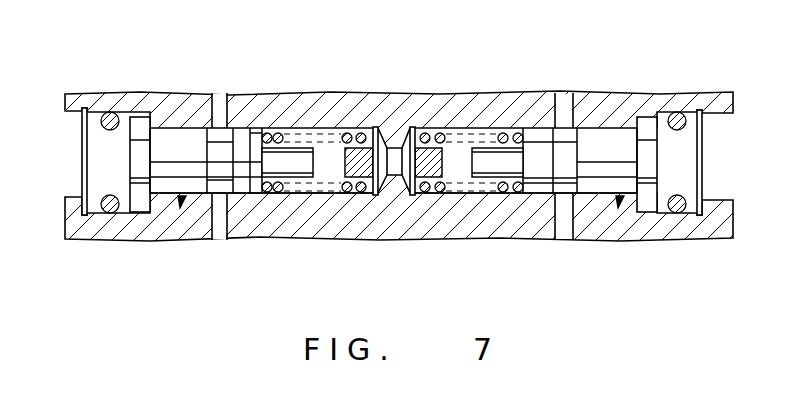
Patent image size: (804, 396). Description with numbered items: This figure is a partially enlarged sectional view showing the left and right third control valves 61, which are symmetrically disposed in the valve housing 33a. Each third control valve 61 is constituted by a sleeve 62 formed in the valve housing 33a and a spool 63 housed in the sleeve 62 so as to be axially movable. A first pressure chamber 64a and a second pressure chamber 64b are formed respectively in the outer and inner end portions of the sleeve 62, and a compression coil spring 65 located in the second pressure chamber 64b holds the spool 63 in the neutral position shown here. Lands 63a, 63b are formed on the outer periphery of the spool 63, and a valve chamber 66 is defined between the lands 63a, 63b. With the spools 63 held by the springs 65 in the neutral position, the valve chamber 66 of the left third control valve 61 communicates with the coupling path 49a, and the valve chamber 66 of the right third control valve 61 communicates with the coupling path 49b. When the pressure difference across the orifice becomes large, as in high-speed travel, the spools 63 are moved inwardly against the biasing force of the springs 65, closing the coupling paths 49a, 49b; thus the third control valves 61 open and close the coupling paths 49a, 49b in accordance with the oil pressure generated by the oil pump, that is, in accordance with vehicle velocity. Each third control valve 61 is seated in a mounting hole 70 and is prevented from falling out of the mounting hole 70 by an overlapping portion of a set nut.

The valve housing 33a is at (484, 94).
The coupling path 49a is at (228, 104).
The coupling path 49b is at (578, 104).
The third control valve 61 is at (183, 206).
The sleeve 62 is at (297, 237).
The spool 63 is at (176, 125).
The land 63a is at (153, 213).
The land 63b is at (266, 238).
The first pressure chamber 64a is at (113, 214).
The second pressure chamber 64b is at (333, 145).
The compression coil spring 65 is at (336, 198).
The valve chamber 66 is at (222, 237).
The mounting hole 70 is at (714, 116).